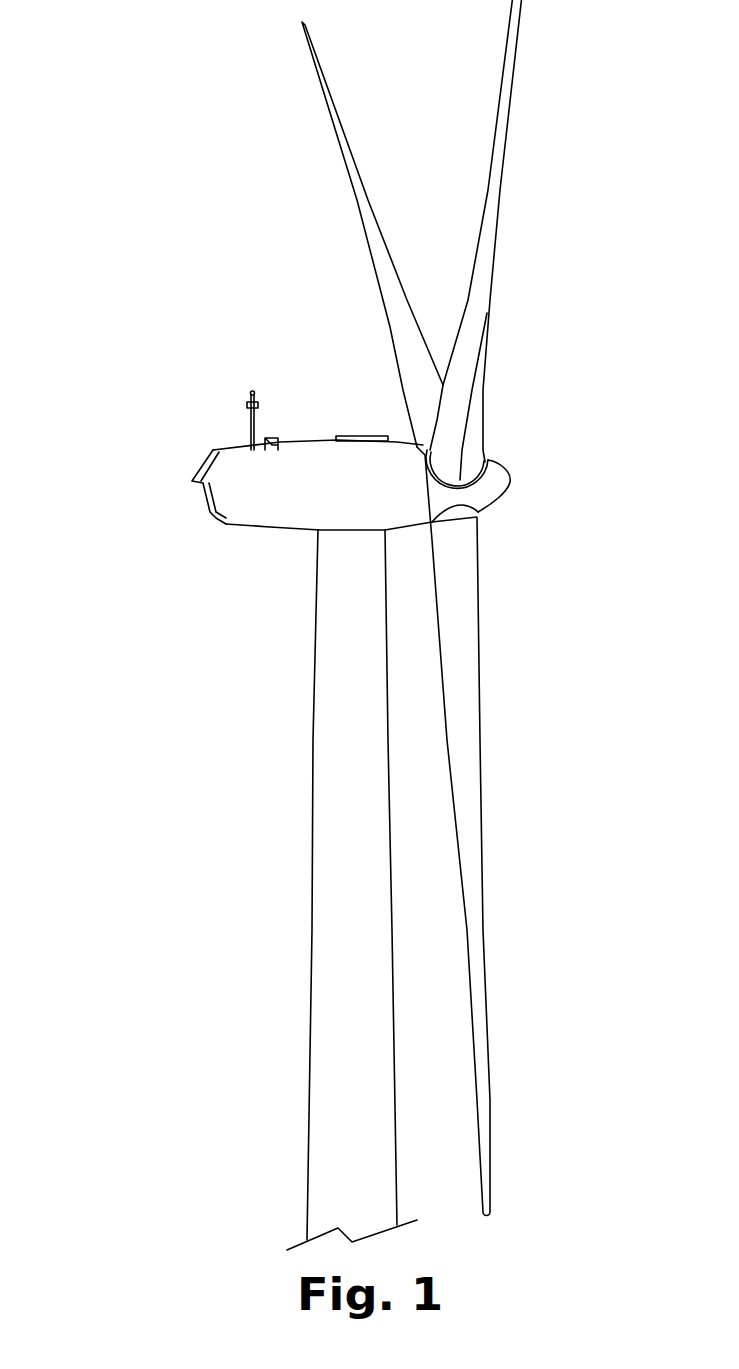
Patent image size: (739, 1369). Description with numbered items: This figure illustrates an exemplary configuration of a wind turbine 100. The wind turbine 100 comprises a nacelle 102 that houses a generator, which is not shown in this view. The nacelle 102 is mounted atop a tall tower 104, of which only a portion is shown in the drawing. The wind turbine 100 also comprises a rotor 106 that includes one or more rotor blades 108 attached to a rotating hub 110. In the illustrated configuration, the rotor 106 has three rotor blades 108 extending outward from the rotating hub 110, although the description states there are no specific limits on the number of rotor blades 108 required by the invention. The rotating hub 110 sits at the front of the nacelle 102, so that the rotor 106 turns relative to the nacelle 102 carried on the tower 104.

The wind turbine 100 is at (351, 625).
The nacelle 102 is at (323, 495).
The tower 104 is at (315, 890).
The rotor 106 is at (478, 608).
The rotor blades 108 is at (453, 608).
The rotating hub 110 is at (511, 495).